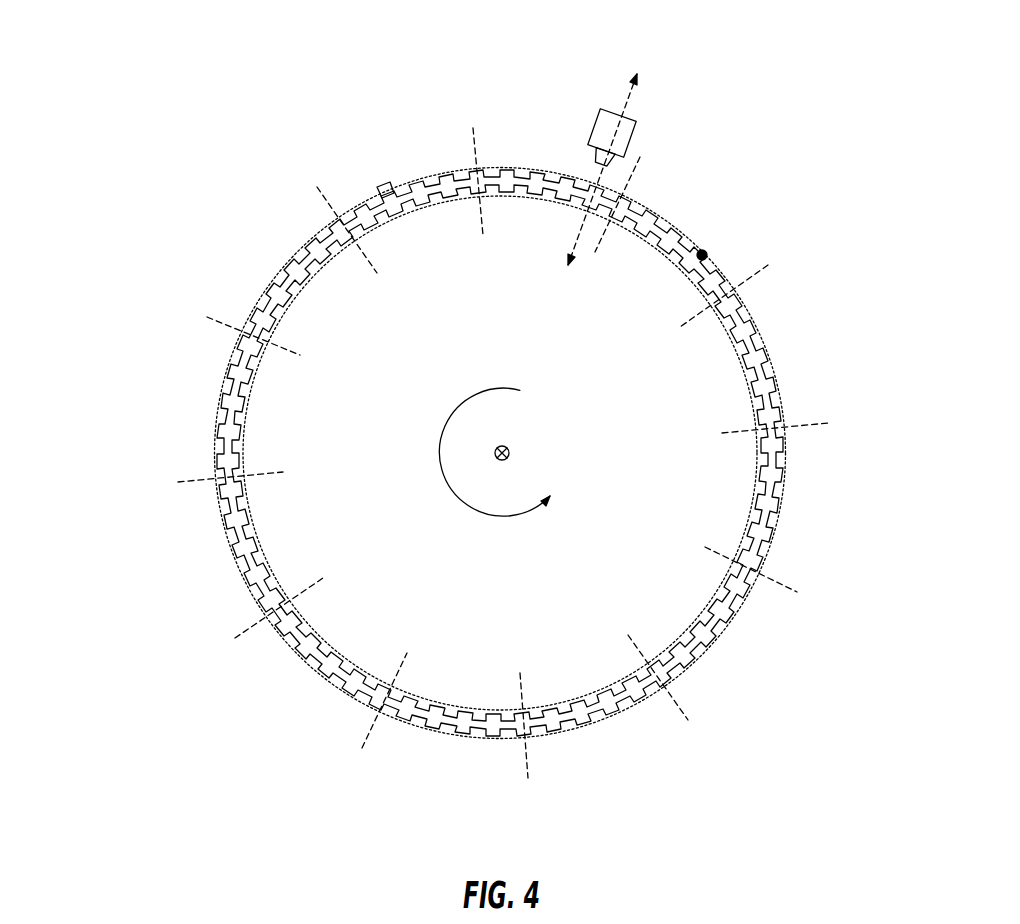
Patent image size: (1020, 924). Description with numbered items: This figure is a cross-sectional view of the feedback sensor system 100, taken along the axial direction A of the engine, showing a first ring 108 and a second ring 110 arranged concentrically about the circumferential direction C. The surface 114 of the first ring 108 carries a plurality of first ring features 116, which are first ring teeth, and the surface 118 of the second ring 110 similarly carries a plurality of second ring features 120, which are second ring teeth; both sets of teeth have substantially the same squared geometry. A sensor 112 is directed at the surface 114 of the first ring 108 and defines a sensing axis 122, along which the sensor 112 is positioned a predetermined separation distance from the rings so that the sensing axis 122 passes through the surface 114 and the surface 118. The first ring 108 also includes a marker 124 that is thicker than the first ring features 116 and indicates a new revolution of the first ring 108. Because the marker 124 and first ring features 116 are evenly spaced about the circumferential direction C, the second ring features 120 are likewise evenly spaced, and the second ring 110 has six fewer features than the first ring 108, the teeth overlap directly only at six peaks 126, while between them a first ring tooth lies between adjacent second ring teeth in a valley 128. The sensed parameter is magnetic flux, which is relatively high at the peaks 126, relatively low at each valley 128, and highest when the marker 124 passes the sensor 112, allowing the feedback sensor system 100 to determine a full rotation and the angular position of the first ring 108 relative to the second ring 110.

The feedback sensor system 100 is at (176, 80).
The first ring 108 is at (224, 388).
The second ring 110 is at (238, 463).
The sensor 112 is at (630, 137).
The surface of the first ring 114 is at (288, 256).
The first ring features 116 is at (315, 238).
The surface of the second ring 118 is at (704, 254).
The second ring features 120 is at (752, 317).
The sensing axis 122 is at (623, 100).
The marker 124 is at (384, 183).
The peaks 126 is at (477, 148).
The valley 128 is at (330, 198).
The axial direction A is at (510, 452).
The circumferential direction C is at (503, 452).